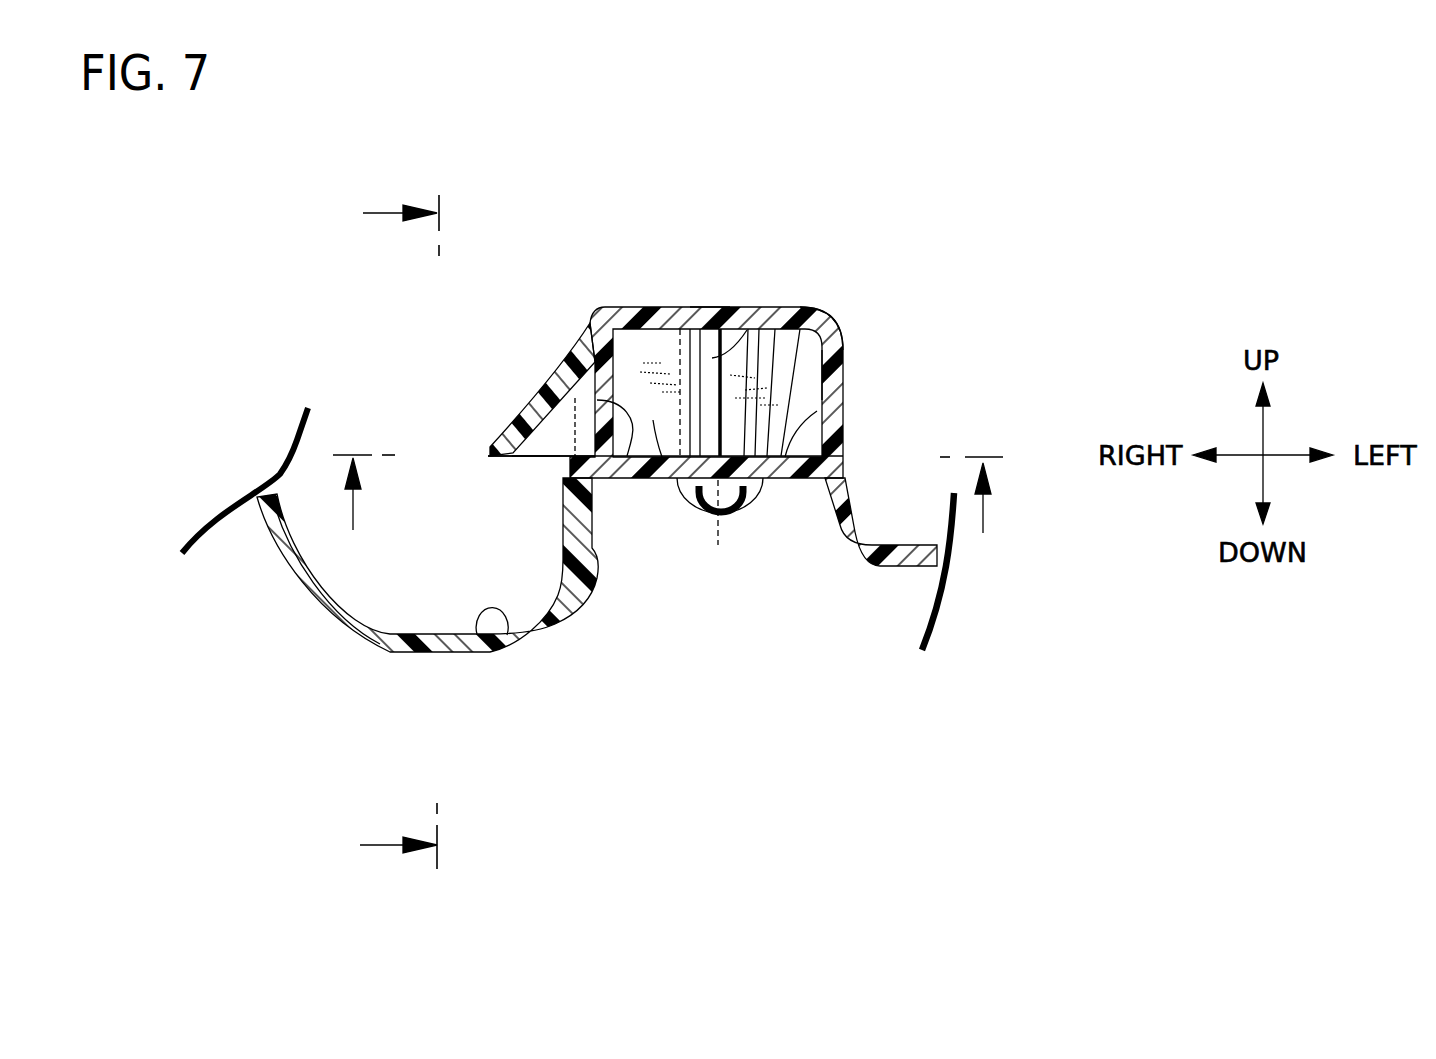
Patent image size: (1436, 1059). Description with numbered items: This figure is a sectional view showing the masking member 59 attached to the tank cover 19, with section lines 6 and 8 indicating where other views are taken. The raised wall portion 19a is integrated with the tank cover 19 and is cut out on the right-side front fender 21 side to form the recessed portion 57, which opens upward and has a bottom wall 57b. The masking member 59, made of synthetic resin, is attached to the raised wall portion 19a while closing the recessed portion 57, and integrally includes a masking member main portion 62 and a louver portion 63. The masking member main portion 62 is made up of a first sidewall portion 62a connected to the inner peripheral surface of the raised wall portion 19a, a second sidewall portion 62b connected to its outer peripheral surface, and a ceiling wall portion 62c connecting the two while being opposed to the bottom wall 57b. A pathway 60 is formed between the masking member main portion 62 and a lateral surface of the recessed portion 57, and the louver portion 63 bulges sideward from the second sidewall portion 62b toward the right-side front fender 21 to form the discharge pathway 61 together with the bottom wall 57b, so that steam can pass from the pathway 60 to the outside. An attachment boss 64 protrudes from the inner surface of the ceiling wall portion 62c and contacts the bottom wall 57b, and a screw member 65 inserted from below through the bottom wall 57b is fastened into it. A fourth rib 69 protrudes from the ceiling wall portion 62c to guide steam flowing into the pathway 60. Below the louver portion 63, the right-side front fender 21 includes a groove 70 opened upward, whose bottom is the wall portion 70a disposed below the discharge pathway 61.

The section line VI-VI 6 is at (380, 529).
The section line VIII-VIII 8 is at (668, 532).
The tank cover 19 is at (903, 570).
The raised wall portion 19a is at (853, 480).
The right-side front fender 21 is at (283, 567).
The recessed portion 57 is at (548, 387).
The bottom wall 57b is at (792, 430).
The masking member 59 is at (680, 203).
The pathway 60 is at (838, 345).
The discharge pathway 61 is at (550, 447).
The masking member main portion 62 is at (666, 290).
The first sidewall portion 62a is at (800, 367).
The second sidewall portion 62b is at (624, 478).
The ceiling wall portion 62c is at (708, 328).
The louver portion 63 is at (549, 376).
The attachment boss 64 is at (747, 330).
The screw member 65 is at (752, 507).
The fourth rib 69 is at (653, 420).
The groove 70 is at (337, 604).
The wall portion 70a is at (507, 622).